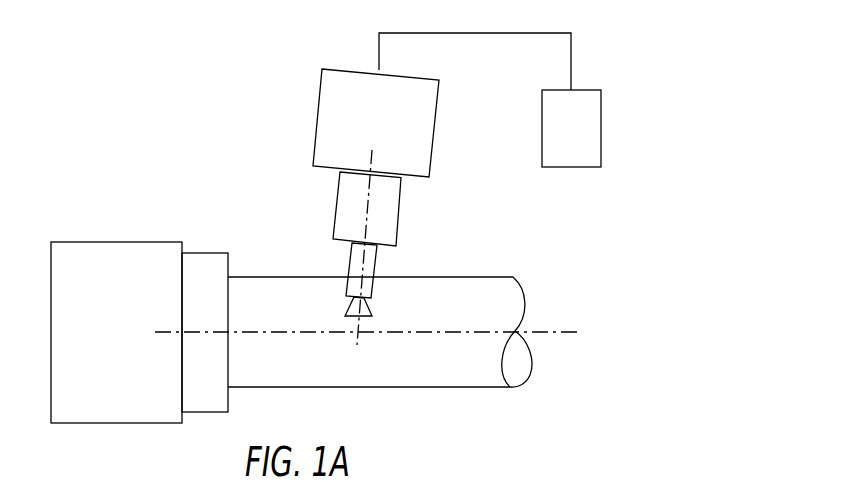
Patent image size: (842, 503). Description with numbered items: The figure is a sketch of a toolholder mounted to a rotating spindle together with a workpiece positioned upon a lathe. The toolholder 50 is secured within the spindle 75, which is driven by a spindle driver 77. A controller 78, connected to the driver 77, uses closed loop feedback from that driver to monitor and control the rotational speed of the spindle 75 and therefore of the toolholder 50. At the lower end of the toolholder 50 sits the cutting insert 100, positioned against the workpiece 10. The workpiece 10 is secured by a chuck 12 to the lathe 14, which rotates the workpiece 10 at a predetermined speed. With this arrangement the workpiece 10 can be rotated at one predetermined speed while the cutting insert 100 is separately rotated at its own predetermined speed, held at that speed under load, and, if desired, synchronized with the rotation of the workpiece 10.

The workpiece 10 is at (424, 388).
The chuck 12 is at (210, 252).
The lathe 14 is at (82, 241).
The toolholder 50 is at (350, 265).
The spindle 75 is at (338, 205).
The spindle driver 77 is at (320, 95).
The controller 78 is at (577, 170).
The cutting insert 100 is at (351, 308).